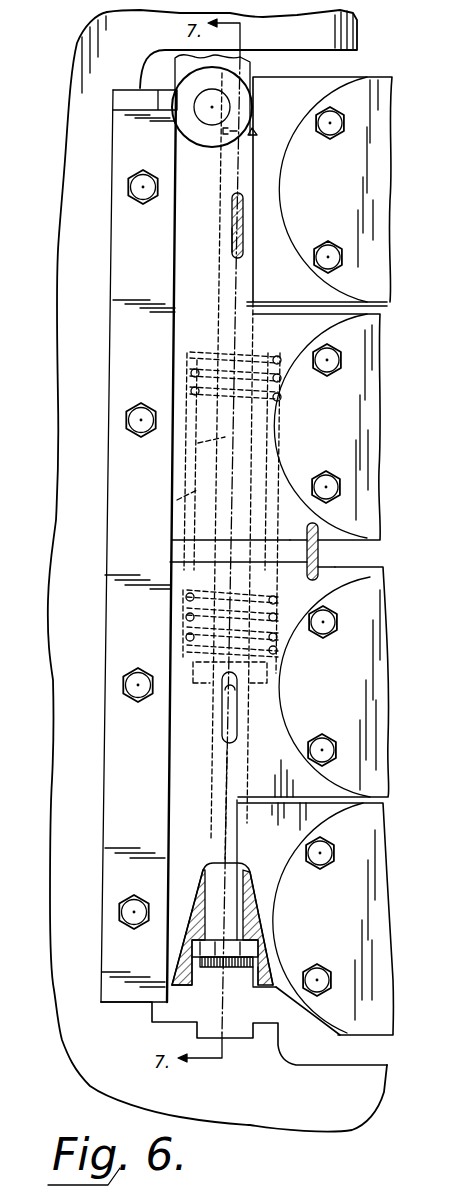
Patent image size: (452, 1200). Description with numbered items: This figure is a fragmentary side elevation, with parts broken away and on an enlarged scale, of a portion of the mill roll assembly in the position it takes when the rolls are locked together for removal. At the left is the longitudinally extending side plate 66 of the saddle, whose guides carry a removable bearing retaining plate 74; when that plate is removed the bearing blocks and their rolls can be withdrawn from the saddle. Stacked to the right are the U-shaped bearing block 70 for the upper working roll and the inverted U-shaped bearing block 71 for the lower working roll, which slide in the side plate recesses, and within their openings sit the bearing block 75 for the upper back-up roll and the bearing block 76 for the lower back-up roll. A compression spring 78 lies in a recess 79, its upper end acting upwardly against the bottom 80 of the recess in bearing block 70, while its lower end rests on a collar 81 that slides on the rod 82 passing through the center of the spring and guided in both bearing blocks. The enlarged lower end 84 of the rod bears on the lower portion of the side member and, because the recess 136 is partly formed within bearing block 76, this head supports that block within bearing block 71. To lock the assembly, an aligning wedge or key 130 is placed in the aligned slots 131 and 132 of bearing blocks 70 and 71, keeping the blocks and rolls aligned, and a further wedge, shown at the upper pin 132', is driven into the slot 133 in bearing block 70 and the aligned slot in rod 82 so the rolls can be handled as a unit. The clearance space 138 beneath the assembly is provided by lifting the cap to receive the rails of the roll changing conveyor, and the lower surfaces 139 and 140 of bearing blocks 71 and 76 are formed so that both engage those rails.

The side plate 66 is at (217, 571).
The bearing retaining plate 74 is at (139, 546).
The bearing block 75 is at (319, 191).
The U-shaped bearing block 70 is at (276, 427).
The inverted U-shaped bearing block 71 is at (305, 682).
The bearing block 76 is at (315, 919).
The slot 133 is at (235, 193).
The pin slot 132' is at (177, 251).
The aligning wedge or key 130 is at (318, 552).
The slot 131 is at (313, 523).
The slot 132 is at (367, 582).
The bottom of recess 80 is at (207, 355).
The compression spring 78 is at (187, 393).
The rod 82 is at (225, 438).
The recess 79 is at (197, 490).
The collar 81 is at (183, 653).
The recess 136 is at (200, 930).
The enlarged lower end of rod 84 is at (197, 950).
The clearance space 138 is at (238, 970).
The lower surface 139 is at (213, 970).
The lower surface 140 is at (256, 985).